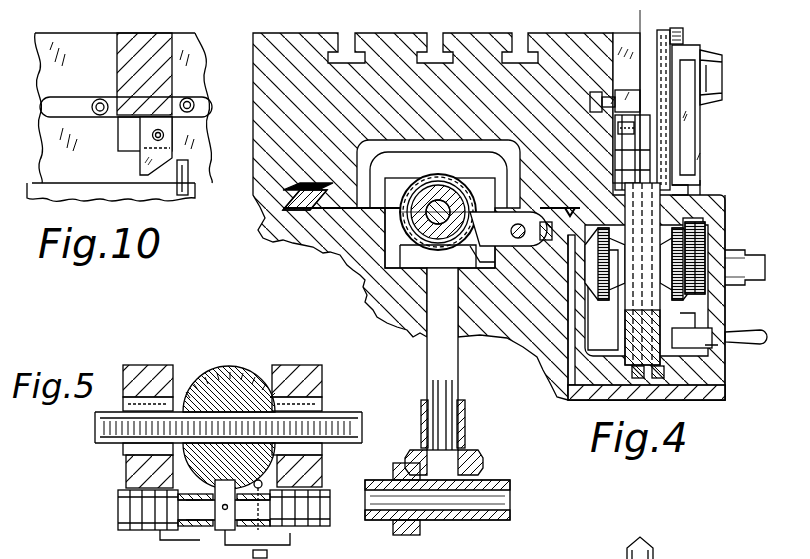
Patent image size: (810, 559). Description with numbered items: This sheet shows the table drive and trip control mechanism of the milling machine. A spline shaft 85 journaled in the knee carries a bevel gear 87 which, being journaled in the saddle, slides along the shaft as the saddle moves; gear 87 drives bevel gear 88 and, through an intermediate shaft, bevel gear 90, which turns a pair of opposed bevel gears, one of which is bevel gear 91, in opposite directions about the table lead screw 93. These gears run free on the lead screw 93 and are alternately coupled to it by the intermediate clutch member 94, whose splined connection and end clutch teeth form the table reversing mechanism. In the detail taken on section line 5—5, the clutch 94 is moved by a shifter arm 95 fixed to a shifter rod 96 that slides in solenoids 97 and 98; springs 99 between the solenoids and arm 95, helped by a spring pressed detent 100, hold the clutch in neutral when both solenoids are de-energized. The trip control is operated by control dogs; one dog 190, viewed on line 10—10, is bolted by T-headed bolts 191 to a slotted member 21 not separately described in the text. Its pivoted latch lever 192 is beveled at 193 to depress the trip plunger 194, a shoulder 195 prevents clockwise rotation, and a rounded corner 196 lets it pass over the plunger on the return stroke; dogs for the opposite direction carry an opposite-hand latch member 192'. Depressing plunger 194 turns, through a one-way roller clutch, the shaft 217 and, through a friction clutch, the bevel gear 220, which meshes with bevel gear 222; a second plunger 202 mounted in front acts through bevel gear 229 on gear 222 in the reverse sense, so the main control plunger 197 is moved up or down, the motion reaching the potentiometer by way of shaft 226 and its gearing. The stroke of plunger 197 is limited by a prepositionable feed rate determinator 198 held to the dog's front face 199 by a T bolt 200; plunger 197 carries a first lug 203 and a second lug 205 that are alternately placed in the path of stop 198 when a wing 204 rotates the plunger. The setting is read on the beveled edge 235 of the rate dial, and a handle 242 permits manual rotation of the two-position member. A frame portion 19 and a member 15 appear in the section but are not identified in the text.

In FIG. 10, the machine bed / table 21 is at (72, 45).
In FIG. 4, the machine bed / table 21 is at (372, 40).
In FIG. 10, the control dog 190 is at (175, 55).
In FIG. 10, the T-headed bolts 191 is at (196, 97).
In FIG. 4, the T-headed bolts 191 is at (596, 92).
In FIG. 10, the shoulder 195 is at (142, 128).
In FIG. 10, the pivoted latch lever 192 is at (130, 148).
In FIG. 4, the pivoted latch lever 192 is at (603, 130).
In FIG. 10, the rounded corner 196 is at (165, 135).
In FIG. 10, the trip plunger 194 is at (190, 175).
In FIG. 4, the trip plunger 194 is at (612, 172).
In FIG. 10, the beveled corner 193 is at (164, 172).
In FIG. 5, the intermediate clutch member 94 is at (214, 386).
In FIG. 4, the intermediate clutch member 94 is at (362, 282).
In FIG. 5, the table lead screw 93 is at (340, 412).
In FIG. 4, the table lead screw 93 is at (455, 182).
In FIG. 5, the solenoid 97 is at (128, 512).
In FIG. 5, the solenoid 98 is at (320, 526).
In FIG. 5, the springs 99 is at (201, 494).
In FIG. 5, the shifter arm 95 is at (208, 530).
In FIG. 4, the shifter arm 95 is at (487, 264).
In FIG. 5, the shifter rod 96 is at (185, 530).
In FIG. 4, the shifter rod 96 is at (518, 250).
In FIG. 5, the spring pressed detent 100 is at (292, 543).
In FIG. 4, the spring pressed detent 100 is at (545, 242).
In FIG. 5, the shaft 217 is at (165, 553).
In FIG. 5, the shaft 226 is at (268, 554).
In FIG. 4, the frame 19 is at (290, 232).
In FIG. 4, the bevel gear 90 is at (370, 302).
In FIG. 4, the bevel gear 91 is at (416, 172).
In FIG. 4, the section line 5— 5 is at (371, 212).
In FIG. 4, the arm 15 is at (560, 216).
In FIG. 4, the section line 10— 10 is at (630, 20).
In FIG. 4, the T bolt 200 is at (662, 32).
In FIG. 4, the feed rate determinator 198 is at (684, 34).
In FIG. 4, the first lug 203 is at (694, 50).
In FIG. 4, the wing 204 is at (710, 60).
In FIG. 4, the front face 199 is at (708, 75).
In FIG. 4, the second lug 205 is at (700, 122).
In FIG. 4, the stop member 192' is at (701, 136).
In FIG. 4, the main control plunger 197 is at (702, 156).
In FIG. 4, the second plunger 202 is at (702, 182).
In FIG. 4, the bevel gear 222 is at (608, 326).
In FIG. 4, the beveled gear 220 is at (606, 308).
In FIG. 4, the bevel gear 229 is at (720, 312).
In FIG. 4, the beveled edge 235 is at (742, 250).
In FIG. 4, the handle 242 is at (744, 345).
In FIG. 4, the bevel gear 88 is at (484, 461).
In FIG. 4, the spline shaft 85 is at (468, 508).
In FIG. 4, the bevel gear 87 is at (408, 536).